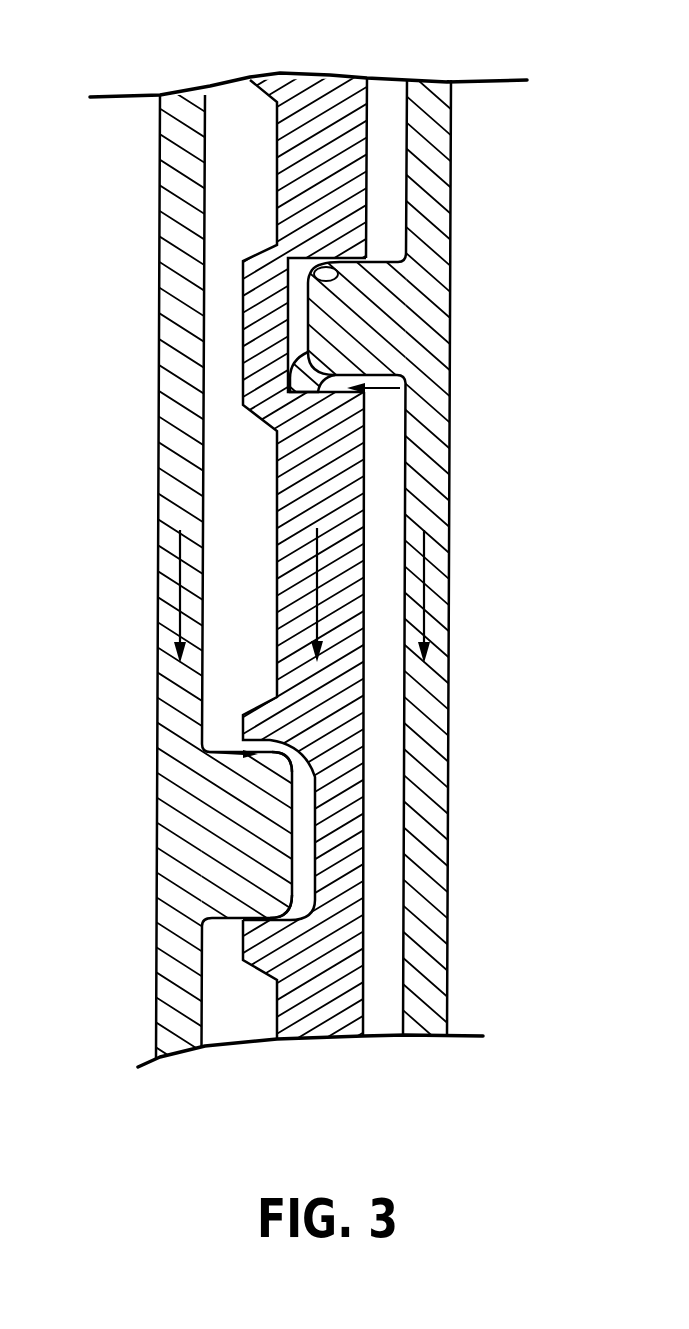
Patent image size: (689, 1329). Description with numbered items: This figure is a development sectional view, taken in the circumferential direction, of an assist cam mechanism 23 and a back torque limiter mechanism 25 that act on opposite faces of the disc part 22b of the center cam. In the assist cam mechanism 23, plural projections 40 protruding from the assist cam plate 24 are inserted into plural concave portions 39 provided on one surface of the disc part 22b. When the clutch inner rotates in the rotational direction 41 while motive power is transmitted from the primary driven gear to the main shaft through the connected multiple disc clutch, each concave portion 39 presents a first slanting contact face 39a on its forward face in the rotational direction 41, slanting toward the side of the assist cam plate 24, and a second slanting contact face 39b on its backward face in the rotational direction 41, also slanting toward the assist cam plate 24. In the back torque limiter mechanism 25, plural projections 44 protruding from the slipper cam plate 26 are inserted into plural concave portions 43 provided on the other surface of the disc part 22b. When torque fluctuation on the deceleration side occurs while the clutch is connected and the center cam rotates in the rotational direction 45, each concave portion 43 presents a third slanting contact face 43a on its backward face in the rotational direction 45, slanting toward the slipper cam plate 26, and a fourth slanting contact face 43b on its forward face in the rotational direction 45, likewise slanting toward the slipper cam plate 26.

The disc part 22b is at (317, 100).
The assist cam mechanism 23 is at (207, 752).
The assist cam plate 24 is at (172, 318).
The back torque limiter mechanism 25 is at (400, 388).
The slipper cam plate 26 is at (437, 369).
The concave portion 39 is at (306, 851).
The first slanting contact face 39a is at (285, 897).
The second slanting contact face 39b is at (283, 762).
The projection 40 is at (273, 808).
The rotational direction 41 is at (166, 590).
The concave portion 43 is at (308, 350).
The third slanting contact face 43a is at (305, 272).
The fourth slanting contact face 43b is at (296, 367).
The projection 44 is at (322, 312).
The rotational direction 45 is at (318, 600).